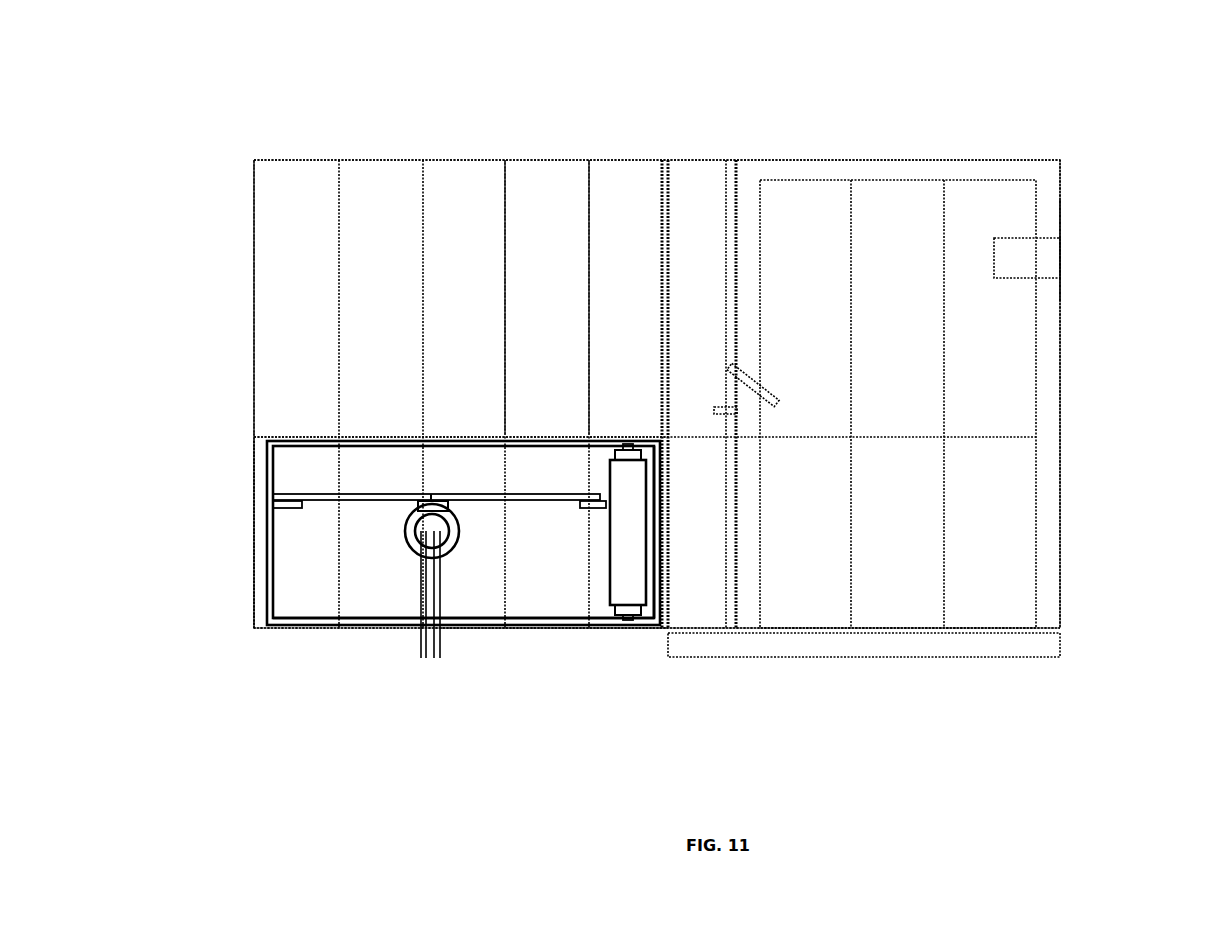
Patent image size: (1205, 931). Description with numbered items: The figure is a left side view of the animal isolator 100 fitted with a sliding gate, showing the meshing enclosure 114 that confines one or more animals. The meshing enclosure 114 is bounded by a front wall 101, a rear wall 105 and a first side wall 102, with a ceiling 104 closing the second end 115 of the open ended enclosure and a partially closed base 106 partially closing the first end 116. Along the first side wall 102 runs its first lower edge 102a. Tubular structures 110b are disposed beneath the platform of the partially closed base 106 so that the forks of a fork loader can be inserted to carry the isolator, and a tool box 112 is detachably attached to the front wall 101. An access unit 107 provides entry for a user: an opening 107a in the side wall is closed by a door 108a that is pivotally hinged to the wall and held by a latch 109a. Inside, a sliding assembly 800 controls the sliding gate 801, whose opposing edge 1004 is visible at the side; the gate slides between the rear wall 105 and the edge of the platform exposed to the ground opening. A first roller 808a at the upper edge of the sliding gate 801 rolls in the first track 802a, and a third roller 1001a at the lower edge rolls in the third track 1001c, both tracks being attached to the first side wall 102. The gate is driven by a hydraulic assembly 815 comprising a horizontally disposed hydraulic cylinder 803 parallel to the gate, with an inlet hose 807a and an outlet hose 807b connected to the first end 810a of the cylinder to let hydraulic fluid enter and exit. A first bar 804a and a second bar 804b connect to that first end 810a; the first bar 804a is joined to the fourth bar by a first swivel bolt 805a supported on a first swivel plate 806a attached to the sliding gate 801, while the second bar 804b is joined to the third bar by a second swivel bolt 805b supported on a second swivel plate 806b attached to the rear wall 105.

The animal isolator 100 is at (501, 98).
The front wall 101 is at (1063, 348).
The first side wall 102 is at (443, 233).
The first lower edge 102a is at (254, 635).
The ceiling 104 is at (800, 158).
The rear wall 105 is at (252, 200).
The partially closed base 106 is at (1063, 628).
The access unit 107 is at (860, 142).
The opening 107a is at (995, 511).
The door 108a is at (1042, 170).
The latch 109a is at (755, 396).
The tubular structures 110b is at (866, 648).
The tool box 112 is at (1022, 250).
The meshing enclosure 114 is at (1095, 236).
The second end 115 is at (548, 151).
The first end 116 is at (565, 646).
The sliding assembly 800 is at (533, 344).
The sliding gate 801 is at (630, 546).
The first track 802a is at (601, 434).
The hydraulic cylinder 803 is at (427, 527).
The first bar 804a is at (497, 493).
The second bar 804b is at (362, 501).
The first swivel bolt 805a is at (590, 494).
The second swivel bolt 805b is at (290, 499).
The first swivel plate 806a is at (599, 512).
The second swivel plate 806b is at (289, 511).
The inlet hose 807a is at (437, 660).
The outlet hose 807b is at (421, 660).
The first roller 808a is at (628, 442).
The first end of the hydraulic cylinder 810a is at (430, 535).
The hydraulic assembly 815 is at (501, 526).
The third roller 1001a is at (633, 612).
The third track 1001c is at (482, 630).
The opposing edge 1004 is at (653, 582).